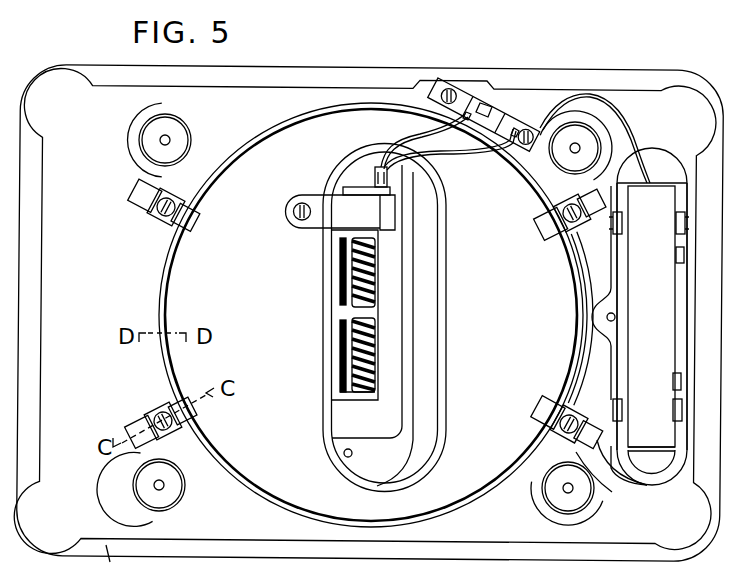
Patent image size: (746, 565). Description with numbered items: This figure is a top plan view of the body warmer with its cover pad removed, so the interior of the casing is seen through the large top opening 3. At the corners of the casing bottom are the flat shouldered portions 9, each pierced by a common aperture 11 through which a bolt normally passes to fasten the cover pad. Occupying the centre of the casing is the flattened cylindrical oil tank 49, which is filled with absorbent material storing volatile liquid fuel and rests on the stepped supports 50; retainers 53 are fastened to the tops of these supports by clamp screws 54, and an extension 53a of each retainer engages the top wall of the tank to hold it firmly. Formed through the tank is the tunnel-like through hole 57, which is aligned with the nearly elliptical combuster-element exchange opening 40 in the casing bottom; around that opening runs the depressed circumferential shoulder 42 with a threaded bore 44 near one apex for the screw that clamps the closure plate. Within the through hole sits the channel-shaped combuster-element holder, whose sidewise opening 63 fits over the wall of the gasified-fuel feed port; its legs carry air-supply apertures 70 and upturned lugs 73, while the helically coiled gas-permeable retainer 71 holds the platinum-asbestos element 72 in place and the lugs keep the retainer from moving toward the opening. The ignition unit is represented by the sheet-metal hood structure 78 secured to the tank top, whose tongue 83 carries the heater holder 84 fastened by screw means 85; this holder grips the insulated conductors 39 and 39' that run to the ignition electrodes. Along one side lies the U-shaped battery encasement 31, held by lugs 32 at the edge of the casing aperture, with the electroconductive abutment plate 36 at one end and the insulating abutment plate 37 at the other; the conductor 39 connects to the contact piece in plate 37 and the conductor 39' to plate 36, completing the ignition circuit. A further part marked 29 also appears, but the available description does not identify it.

The opening 3 is at (44, 383).
The flat shouldered portions 9 is at (150, 141).
The common aperture 11 is at (167, 139).
The oil tank 49 is at (279, 142).
The tongue 83 is at (425, 167).
The through hole 57 is at (442, 278).
The combuster-element exchange opening 40 is at (398, 268).
The rod 72 is at (350, 345).
The circumferential shoulder 42 is at (412, 446).
The threaded bore 44 is at (346, 457).
The hood structure 78 is at (318, 202).
The heater holder 84 is at (368, 184).
The screw means 85 is at (381, 165).
The opening of combuster-element holder 63 is at (331, 250).
The upturned lugs 73 is at (343, 273).
The apertures 70 is at (358, 292).
The gas-permeable retainer 71 is at (350, 380).
The extension 53a is at (541, 415).
The clamp screw 54 is at (556, 428).
The retainers 53 is at (557, 441).
The stepped supports 50 is at (598, 468).
The insulated conductor 39 is at (652, 335).
The insulated conductor 39' is at (611, 138).
The switch unit 29 is at (617, 318).
The battery encasement 31 is at (636, 358).
The electroconductive abutment plate 36 is at (652, 190).
The abutment plate 37 is at (655, 447).
The lugs 32 is at (677, 226).